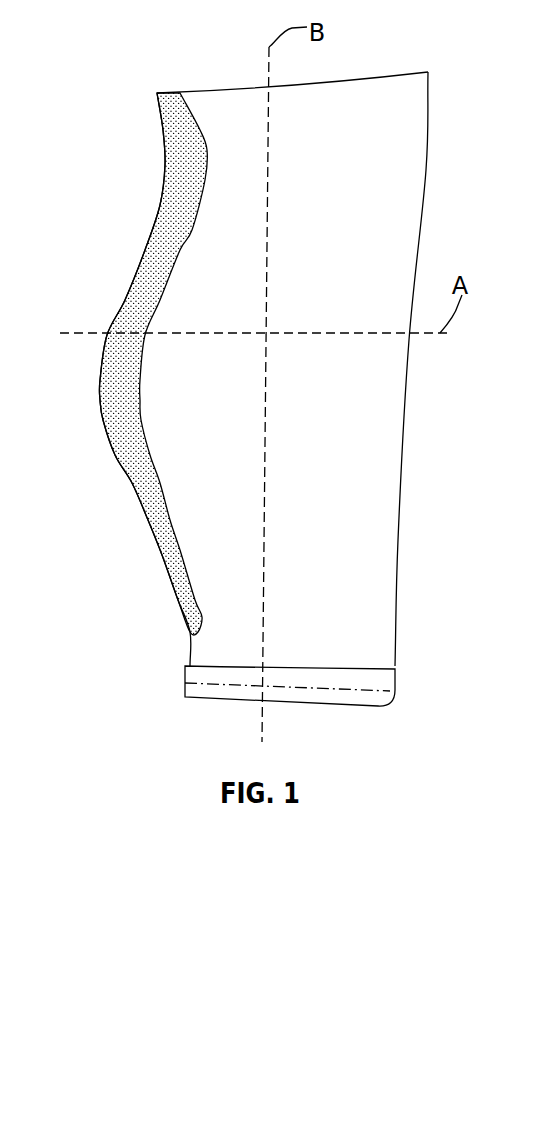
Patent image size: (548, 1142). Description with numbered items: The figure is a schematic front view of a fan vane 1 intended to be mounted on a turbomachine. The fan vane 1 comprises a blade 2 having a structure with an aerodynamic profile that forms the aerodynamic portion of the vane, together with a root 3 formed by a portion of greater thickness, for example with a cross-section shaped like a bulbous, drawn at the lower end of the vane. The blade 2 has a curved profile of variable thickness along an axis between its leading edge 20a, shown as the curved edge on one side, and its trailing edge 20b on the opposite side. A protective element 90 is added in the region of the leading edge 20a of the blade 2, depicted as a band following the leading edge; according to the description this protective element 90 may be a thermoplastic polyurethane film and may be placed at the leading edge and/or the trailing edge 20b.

The fan vane 1 is at (260, 395).
The blade 2 is at (260, 369).
The root 3 is at (357, 716).
The leading edge 20a is at (170, 202).
The trailing edge 20b is at (400, 483).
The protective element 90 is at (110, 453).